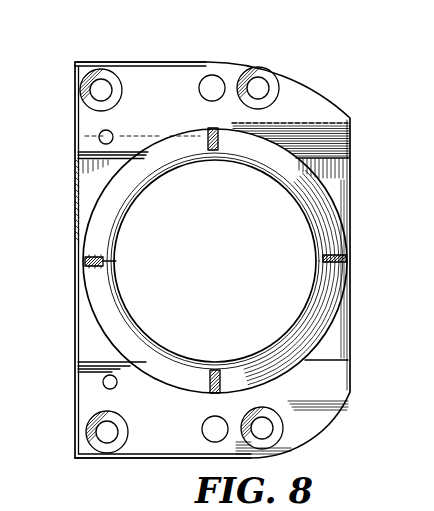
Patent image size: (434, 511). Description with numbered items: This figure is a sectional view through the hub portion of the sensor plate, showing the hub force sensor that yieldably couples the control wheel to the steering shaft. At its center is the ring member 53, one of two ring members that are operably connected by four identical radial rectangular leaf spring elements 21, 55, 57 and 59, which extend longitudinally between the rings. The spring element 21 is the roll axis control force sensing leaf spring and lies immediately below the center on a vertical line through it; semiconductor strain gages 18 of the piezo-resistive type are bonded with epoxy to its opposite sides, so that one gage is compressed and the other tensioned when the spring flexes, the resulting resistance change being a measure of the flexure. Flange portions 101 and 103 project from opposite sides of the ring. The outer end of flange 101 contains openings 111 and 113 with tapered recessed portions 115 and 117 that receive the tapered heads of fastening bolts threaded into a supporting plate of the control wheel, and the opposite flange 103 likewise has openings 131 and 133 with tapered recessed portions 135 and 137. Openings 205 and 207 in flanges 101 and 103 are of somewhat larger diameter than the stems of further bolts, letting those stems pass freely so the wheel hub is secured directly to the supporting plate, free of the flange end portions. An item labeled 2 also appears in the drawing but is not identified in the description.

The flange portion 101 is at (159, 62).
The flange portion 103 is at (149, 458).
The opening 111 is at (101, 81).
The opening 113 is at (260, 79).
The tapered recessed portion 115 is at (112, 99).
The tapered recessed portion 117 is at (271, 97).
The opening 205 is at (212, 79).
The opening 207 is at (214, 418).
The opening 131 is at (113, 422).
The opening 133 is at (268, 418).
The tapered recessed portion 135 is at (121, 433).
The tapered recessed portion 137 is at (274, 424).
The ring member 53 is at (215, 261).
The radial rectangular leaf spring element 55 is at (217, 151).
The radial rectangular leaf spring element 57 is at (323, 259).
The radial rectangular leaf spring element 59 is at (216, 370).
The semiconductor strain gages 18 is at (98, 268).
The ring insert 2 is at (225, 269).
The roll axis control force sensing leaf spring 21 is at (114, 263).